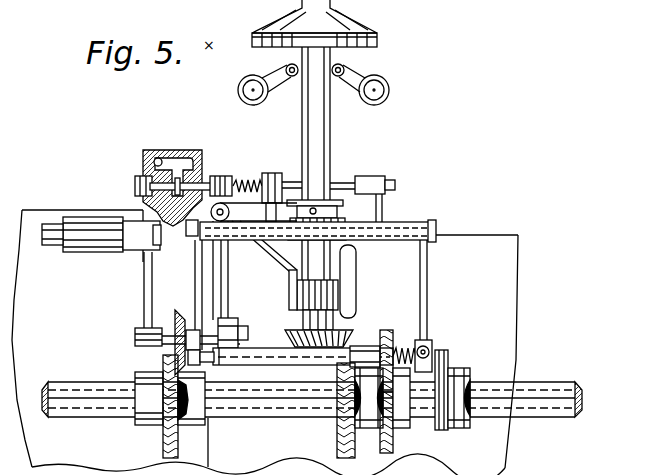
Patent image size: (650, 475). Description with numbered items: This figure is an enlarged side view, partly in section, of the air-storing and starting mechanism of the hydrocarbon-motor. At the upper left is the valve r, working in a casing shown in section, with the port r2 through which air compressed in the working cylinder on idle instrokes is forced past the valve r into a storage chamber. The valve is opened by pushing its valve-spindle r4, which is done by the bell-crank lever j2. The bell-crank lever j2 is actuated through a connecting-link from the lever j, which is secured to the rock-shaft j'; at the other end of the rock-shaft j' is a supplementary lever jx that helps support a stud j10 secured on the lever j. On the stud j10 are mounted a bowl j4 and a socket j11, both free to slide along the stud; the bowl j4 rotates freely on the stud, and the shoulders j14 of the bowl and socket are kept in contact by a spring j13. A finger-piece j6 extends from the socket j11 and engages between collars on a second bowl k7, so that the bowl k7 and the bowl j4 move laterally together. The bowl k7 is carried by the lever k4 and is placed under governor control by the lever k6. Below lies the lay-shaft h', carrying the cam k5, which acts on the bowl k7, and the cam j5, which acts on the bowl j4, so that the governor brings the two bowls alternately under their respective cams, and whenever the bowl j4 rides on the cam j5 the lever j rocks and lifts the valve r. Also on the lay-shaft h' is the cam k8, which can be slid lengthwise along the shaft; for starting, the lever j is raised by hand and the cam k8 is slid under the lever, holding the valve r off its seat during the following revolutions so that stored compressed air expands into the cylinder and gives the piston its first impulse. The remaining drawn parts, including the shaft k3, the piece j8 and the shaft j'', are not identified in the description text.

The valve r is at (176, 170).
The port r2 is at (145, 190).
The valve-spindle r4 is at (222, 181).
The block j8 is at (277, 182).
The lever k6 is at (238, 210).
The bell-crank lever j2 is at (355, 184).
The lever j is at (409, 266).
The rock-shaft j' is at (311, 237).
The shaft k3 is at (52, 243).
The lever k4 is at (150, 306).
The supplementary lever jx is at (197, 300).
The bowl k7 is at (178, 324).
The finger-piece j6 is at (230, 338).
The shaft j'' is at (303, 346).
The shoulders j14 is at (357, 352).
The stud j10 is at (193, 359).
The spring j13 is at (397, 345).
The socket j11 is at (436, 350).
The lay-shaft h' is at (312, 420).
The cam k5 is at (183, 446).
The bowl j4 is at (384, 329).
The cam j5 is at (397, 446).
The cam k8 is at (448, 366).